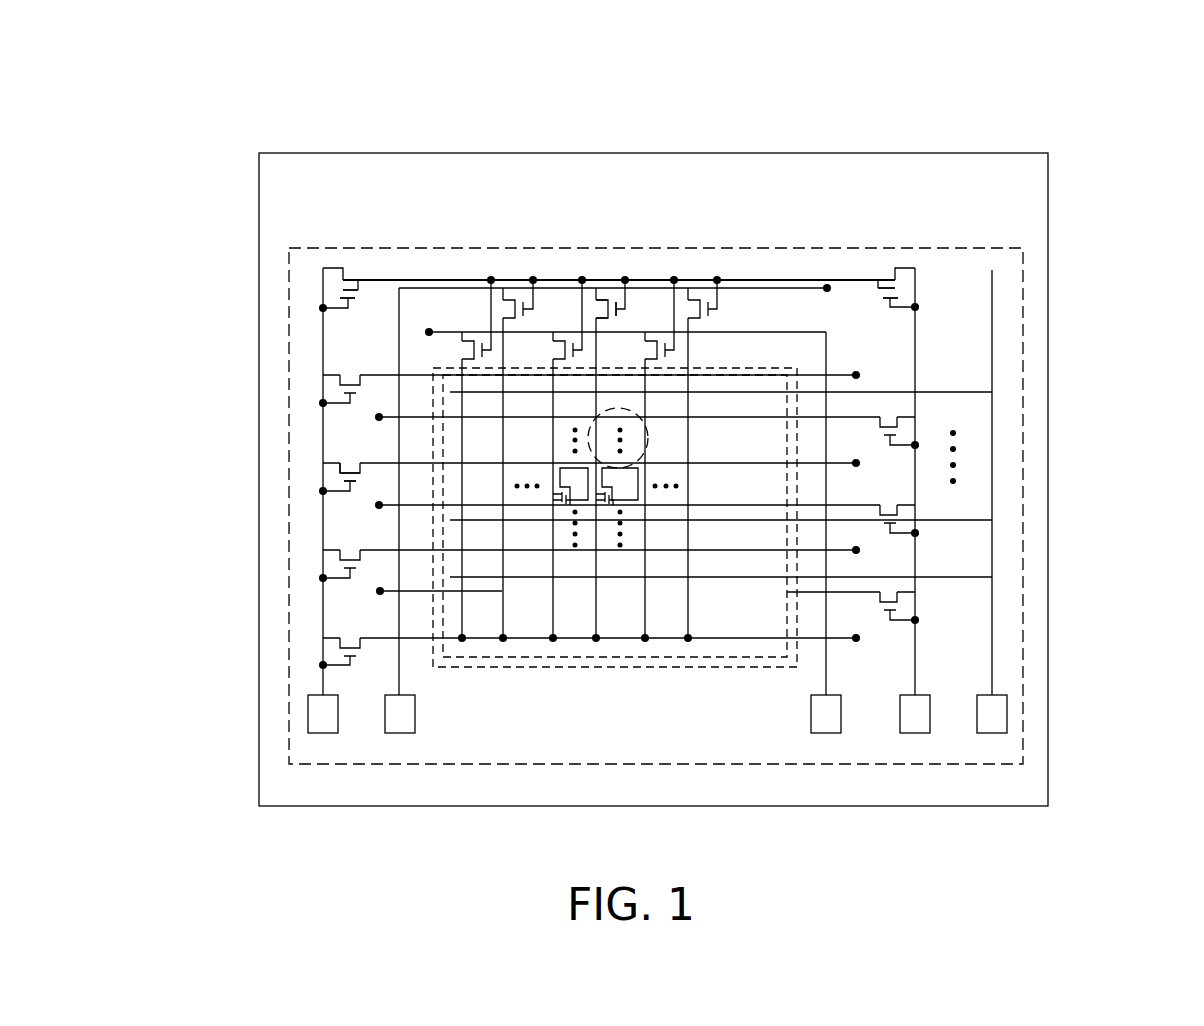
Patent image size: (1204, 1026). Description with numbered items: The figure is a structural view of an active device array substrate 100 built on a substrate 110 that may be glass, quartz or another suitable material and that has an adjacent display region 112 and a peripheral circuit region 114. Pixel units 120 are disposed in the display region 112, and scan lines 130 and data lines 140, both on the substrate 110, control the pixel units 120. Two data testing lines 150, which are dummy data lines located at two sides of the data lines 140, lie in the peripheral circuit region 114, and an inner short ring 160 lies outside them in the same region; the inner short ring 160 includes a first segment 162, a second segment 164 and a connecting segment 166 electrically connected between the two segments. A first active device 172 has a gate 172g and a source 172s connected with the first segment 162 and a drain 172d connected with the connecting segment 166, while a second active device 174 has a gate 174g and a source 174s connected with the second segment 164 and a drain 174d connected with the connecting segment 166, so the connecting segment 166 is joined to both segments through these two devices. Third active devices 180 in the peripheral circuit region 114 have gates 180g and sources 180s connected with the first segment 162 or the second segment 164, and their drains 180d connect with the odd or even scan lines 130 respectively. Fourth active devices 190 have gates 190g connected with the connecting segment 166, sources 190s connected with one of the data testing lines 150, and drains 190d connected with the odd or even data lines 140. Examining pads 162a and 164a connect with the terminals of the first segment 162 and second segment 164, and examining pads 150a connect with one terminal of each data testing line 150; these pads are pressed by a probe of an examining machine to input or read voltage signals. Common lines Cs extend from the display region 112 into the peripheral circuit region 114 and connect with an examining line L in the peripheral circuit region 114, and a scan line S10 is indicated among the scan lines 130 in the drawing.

The active device array substrate 100 is at (1141, 862).
The substrate 110 is at (1040, 225).
The display region 112 is at (790, 410).
The peripheral circuit region 114 is at (1023, 315).
The pixel units 120 is at (567, 503).
The scan lines 130 is at (530, 637).
The data lines 140 is at (380, 591).
The data testing lines 150 is at (399, 527).
The examining pads 150a is at (404, 733).
The inner short ring 160 is at (172, 288).
The first segment 162 is at (323, 368).
The examining pad 162a is at (323, 733).
The second segment 164 is at (893, 308).
The examining pad 164a is at (910, 733).
The connecting segment 166 is at (398, 290).
The first active device 172 is at (172, 190).
The drain 172d is at (357, 282).
The source 172s is at (352, 284).
The gate 172g is at (348, 298).
The second active device 174 is at (1069, 58).
The drain 174d is at (886, 283).
The source 174s is at (898, 288).
The gate 174g is at (888, 303).
The third active devices 180 is at (172, 370).
The drain 180d is at (355, 466).
The source 180s is at (345, 467).
The gate 180g is at (347, 486).
The fourth active devices 190 is at (638, 98).
The drain 190d is at (603, 318).
The source 190s is at (600, 300).
The gate 190g is at (618, 306).
The scan line S10 is at (648, 438).
The common lines Cs is at (938, 577).
The examining line L is at (992, 629).